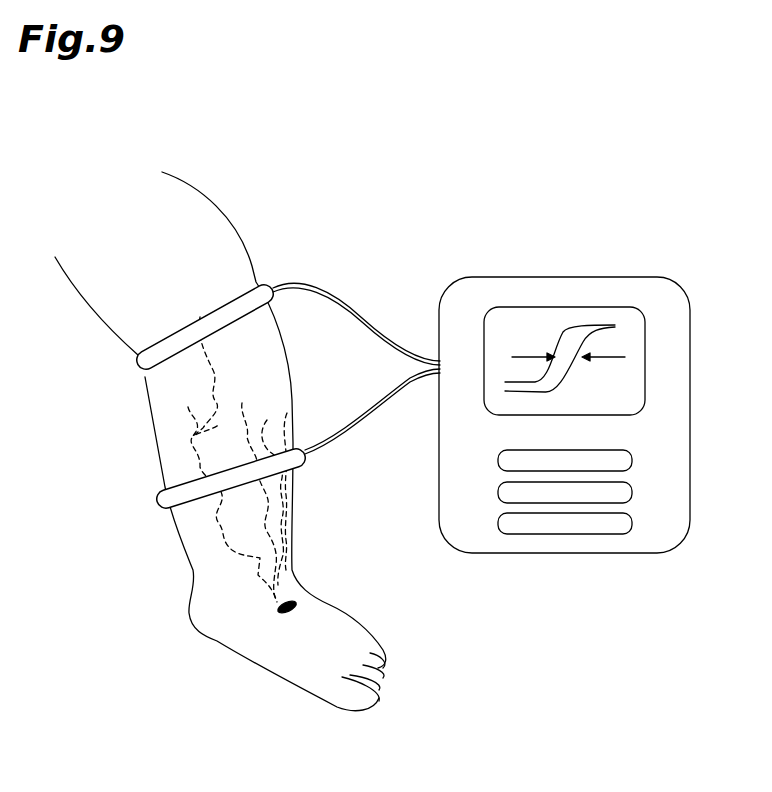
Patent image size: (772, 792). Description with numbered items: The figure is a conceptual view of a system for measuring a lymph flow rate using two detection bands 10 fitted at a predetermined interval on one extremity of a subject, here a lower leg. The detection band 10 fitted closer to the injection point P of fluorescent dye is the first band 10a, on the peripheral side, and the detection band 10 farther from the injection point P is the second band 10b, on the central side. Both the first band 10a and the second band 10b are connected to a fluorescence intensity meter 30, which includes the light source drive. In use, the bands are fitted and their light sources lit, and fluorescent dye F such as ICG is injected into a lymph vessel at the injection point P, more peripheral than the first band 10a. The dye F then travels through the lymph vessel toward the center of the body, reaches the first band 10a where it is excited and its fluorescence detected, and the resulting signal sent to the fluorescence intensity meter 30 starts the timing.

The detection band 10 is at (289, 355).
The first band 10a is at (303, 462).
The second band 10b is at (230, 313).
The fluorescence intensity meter 30 is at (560, 277).
The fluorescent dye F is at (193, 436).
The injection point P is at (298, 603).